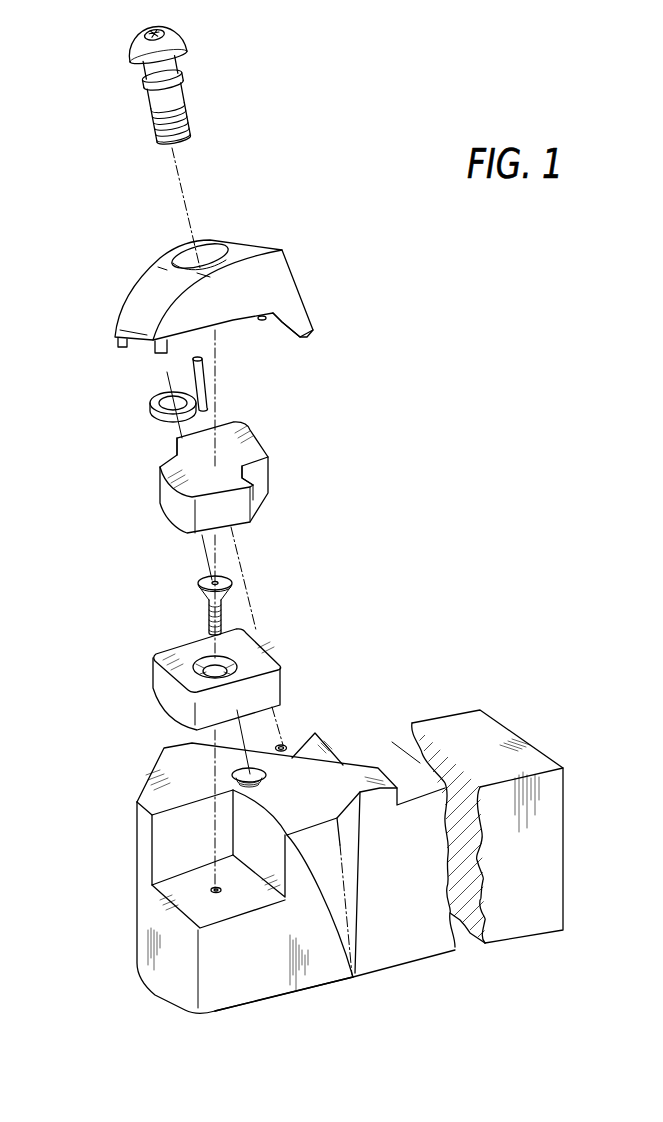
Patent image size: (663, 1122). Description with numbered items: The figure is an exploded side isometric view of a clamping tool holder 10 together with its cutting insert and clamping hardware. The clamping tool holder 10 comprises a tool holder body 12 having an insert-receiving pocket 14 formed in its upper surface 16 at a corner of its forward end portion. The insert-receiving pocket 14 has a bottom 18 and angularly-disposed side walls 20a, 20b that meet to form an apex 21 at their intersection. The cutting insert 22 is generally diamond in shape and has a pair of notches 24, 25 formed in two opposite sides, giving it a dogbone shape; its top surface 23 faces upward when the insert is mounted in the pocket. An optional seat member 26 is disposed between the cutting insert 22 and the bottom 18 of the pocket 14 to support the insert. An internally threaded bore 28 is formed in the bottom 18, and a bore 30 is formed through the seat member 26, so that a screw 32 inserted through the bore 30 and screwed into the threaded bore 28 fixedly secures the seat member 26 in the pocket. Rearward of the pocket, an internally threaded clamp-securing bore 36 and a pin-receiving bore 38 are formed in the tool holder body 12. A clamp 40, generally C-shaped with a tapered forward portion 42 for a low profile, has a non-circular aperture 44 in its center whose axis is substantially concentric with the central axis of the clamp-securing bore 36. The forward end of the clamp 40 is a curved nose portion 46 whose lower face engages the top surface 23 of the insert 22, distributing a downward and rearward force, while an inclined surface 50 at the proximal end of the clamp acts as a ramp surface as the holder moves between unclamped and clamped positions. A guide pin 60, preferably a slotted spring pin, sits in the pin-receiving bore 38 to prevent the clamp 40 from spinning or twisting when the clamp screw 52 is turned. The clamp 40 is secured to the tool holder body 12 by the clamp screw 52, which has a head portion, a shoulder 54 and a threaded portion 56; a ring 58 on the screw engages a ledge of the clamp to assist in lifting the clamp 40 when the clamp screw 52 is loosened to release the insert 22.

The clamping tool holder 10 is at (463, 581).
The tool holder body 12 is at (468, 718).
The insert-receiving pocket 14 is at (124, 870).
The upper surface 16 is at (168, 760).
The bottom 18 is at (187, 914).
The side wall 20a is at (163, 838).
The side wall 20b is at (258, 847).
The apex 21 is at (354, 976).
The cutting insert 22 is at (310, 490).
The top surface 23 is at (212, 483).
The notch 24 is at (263, 475).
The notch 25 is at (157, 457).
The seat member 26 is at (147, 675).
The internally threaded bore 28 is at (221, 890).
The bore 30 is at (228, 658).
The screw 32 is at (224, 612).
The clamp-securing bore 36 is at (265, 767).
The pin-receiving bore 38 is at (284, 745).
The clamp 40 is at (316, 270).
The tapered forward portion 42 is at (151, 290).
The aperture 44 is at (212, 256).
The curved nose portion 46 is at (103, 335).
The inclined surface 50 is at (284, 335).
The clamp screw 52 is at (212, 88).
The shoulder 54 is at (185, 77).
The threaded portion 56 is at (190, 129).
The ring 58 is at (152, 405).
The guide pin 60 is at (210, 397).